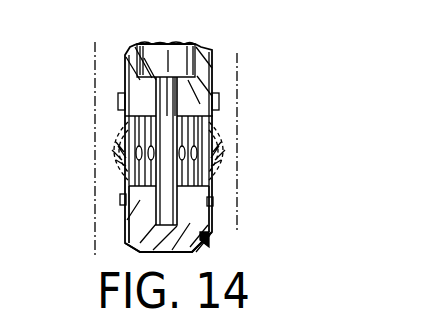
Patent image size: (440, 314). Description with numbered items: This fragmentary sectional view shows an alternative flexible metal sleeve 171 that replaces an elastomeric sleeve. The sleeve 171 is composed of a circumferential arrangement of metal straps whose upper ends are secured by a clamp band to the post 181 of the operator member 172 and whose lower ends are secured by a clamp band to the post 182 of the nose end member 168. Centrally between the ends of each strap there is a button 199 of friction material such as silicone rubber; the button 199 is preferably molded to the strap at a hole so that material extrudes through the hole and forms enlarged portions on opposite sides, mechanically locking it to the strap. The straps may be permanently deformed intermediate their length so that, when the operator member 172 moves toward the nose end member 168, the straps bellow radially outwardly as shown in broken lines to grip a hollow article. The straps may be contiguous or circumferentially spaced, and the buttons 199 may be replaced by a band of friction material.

The flexible metal sleeve 171 is at (112, 185).
The operator member 172 is at (212, 50).
The post 181 is at (130, 77).
The post 182 is at (130, 212).
The nose end member 168 is at (134, 246).
The button 199 is at (226, 162).